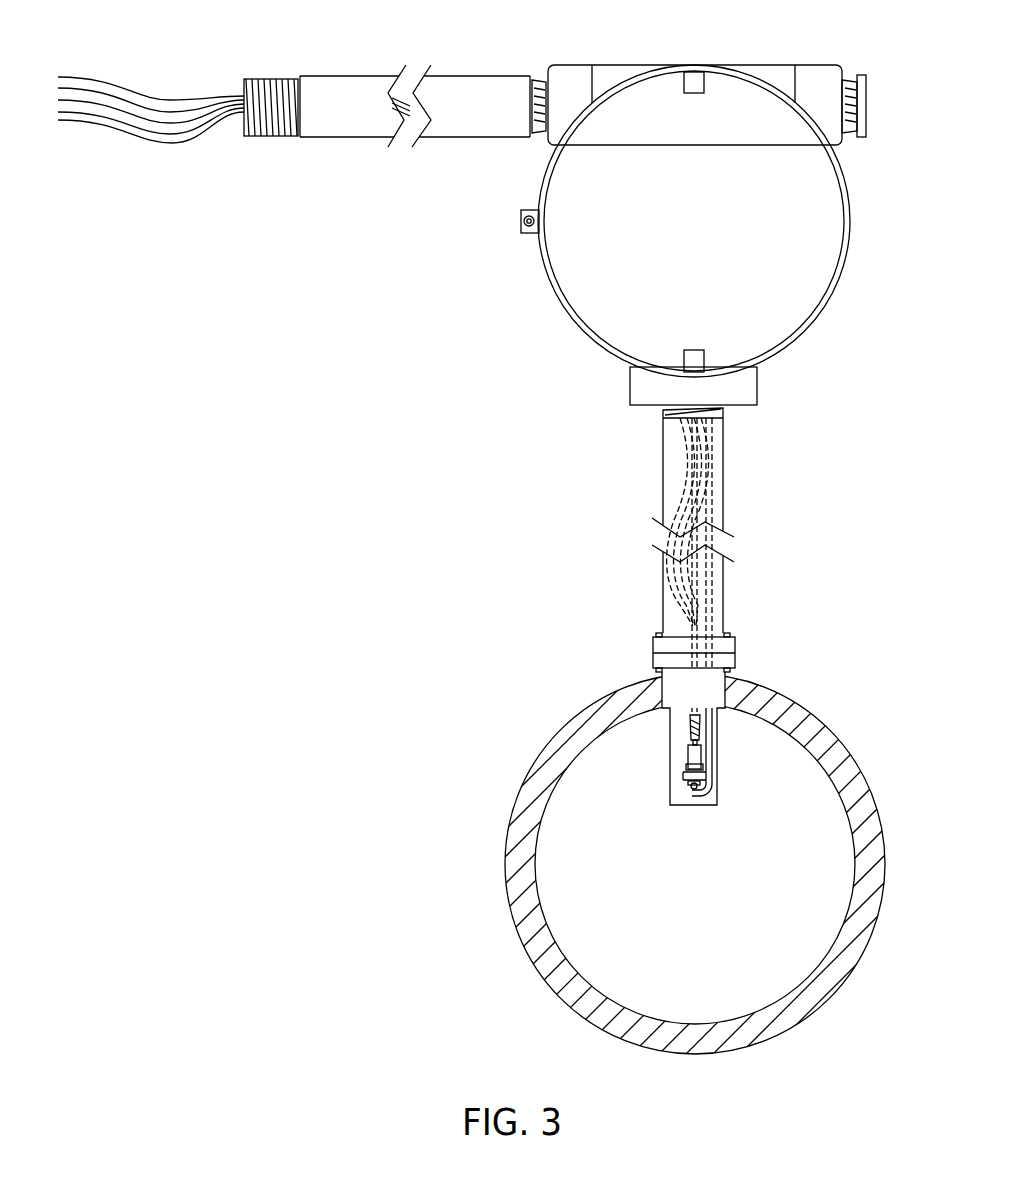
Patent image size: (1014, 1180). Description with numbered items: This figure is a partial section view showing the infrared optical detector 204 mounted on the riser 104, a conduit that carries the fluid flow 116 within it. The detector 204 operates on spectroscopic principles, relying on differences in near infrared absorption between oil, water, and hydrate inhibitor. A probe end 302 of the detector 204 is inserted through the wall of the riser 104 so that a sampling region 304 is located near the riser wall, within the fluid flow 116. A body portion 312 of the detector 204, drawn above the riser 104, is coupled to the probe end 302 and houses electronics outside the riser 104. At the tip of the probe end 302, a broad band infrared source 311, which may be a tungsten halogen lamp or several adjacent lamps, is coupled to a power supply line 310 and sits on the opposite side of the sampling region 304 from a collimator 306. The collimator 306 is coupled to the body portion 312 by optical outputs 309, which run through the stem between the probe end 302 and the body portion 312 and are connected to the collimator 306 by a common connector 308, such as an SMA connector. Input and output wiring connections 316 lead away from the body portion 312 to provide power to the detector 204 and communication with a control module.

The input and output wiring connections 316 is at (106, 76).
The infrared optical detector 204 is at (465, 533).
The body portion 312 is at (550, 283).
The optical outputs 309 is at (685, 462).
The riser 104 is at (520, 890).
The fluid flow 116 is at (716, 981).
The probe end 302 is at (672, 715).
The common connector 308 is at (705, 722).
The collimator 306 is at (684, 758).
The sampling region 304 is at (672, 777).
The power supply line 310 is at (715, 770).
The broad band infrared source 311 is at (688, 790).